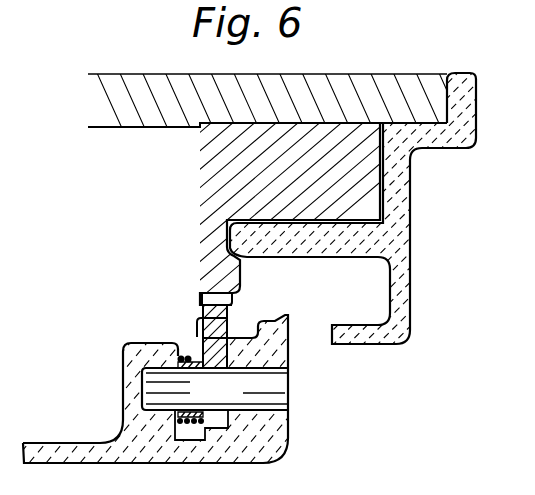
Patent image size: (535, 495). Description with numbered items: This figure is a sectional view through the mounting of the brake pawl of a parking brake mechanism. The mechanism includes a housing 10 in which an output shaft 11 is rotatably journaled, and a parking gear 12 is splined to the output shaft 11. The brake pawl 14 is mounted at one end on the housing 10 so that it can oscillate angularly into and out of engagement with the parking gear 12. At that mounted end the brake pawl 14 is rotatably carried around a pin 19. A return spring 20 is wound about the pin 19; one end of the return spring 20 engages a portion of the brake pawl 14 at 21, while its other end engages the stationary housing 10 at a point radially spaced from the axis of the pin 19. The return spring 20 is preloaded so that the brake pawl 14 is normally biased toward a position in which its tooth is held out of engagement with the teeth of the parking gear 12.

The housing 10 is at (409, 276).
The output shaft 11 is at (152, 127).
The parking gear 12 is at (203, 203).
The brake pawl 14 is at (196, 327).
The pin 19 is at (285, 389).
The return spring 20 is at (176, 439).
The engagement portion of brake pawl 21 is at (229, 319).